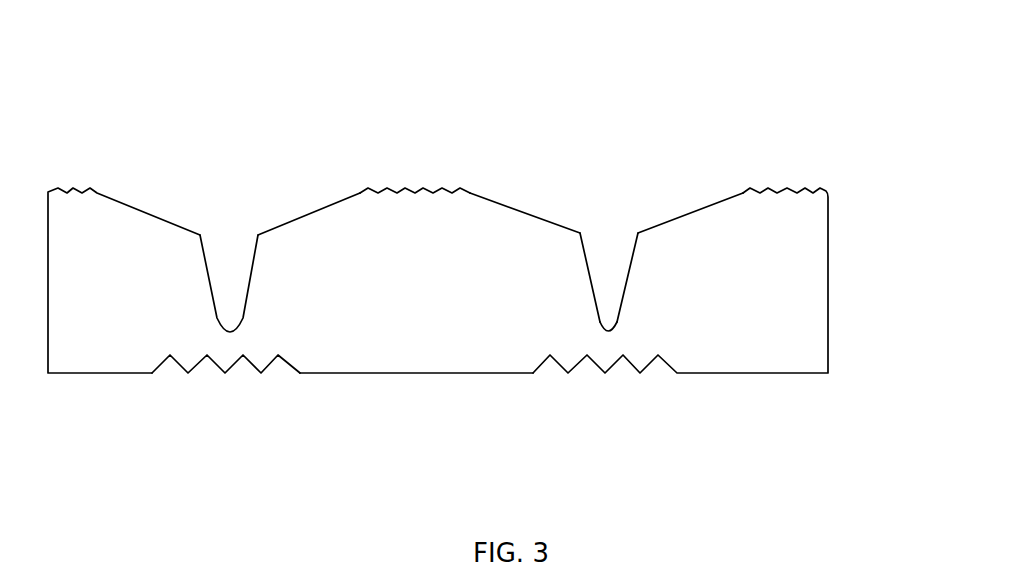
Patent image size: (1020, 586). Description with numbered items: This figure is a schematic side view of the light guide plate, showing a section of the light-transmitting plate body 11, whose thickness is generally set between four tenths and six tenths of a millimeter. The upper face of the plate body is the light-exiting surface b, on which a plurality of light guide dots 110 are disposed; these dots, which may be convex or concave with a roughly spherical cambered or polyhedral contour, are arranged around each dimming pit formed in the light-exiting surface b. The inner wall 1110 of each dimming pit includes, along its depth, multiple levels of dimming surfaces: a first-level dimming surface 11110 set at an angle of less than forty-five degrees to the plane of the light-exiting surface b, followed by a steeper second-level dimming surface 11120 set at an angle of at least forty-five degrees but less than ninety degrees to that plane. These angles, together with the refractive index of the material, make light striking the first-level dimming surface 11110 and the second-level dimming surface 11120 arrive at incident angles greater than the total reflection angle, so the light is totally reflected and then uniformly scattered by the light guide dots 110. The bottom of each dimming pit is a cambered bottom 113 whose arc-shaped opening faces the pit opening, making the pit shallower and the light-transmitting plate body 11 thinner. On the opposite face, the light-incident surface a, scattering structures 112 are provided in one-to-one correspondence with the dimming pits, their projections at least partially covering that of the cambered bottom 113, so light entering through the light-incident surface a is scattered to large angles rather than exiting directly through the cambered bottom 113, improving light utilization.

The light-transmitting plate body 11 is at (875, 123).
The light guide dots 110 is at (417, 190).
The inner wall of dimming pit 1110 is at (573, 90).
The first-level dimming surface 11110 is at (692, 212).
The second-level dimming surface 11120 is at (590, 265).
The scattering structures 112 is at (242, 365).
The cambered bottom 113 is at (625, 330).
The light-incident surface a is at (393, 373).
The light-exiting surface b is at (217, 192).